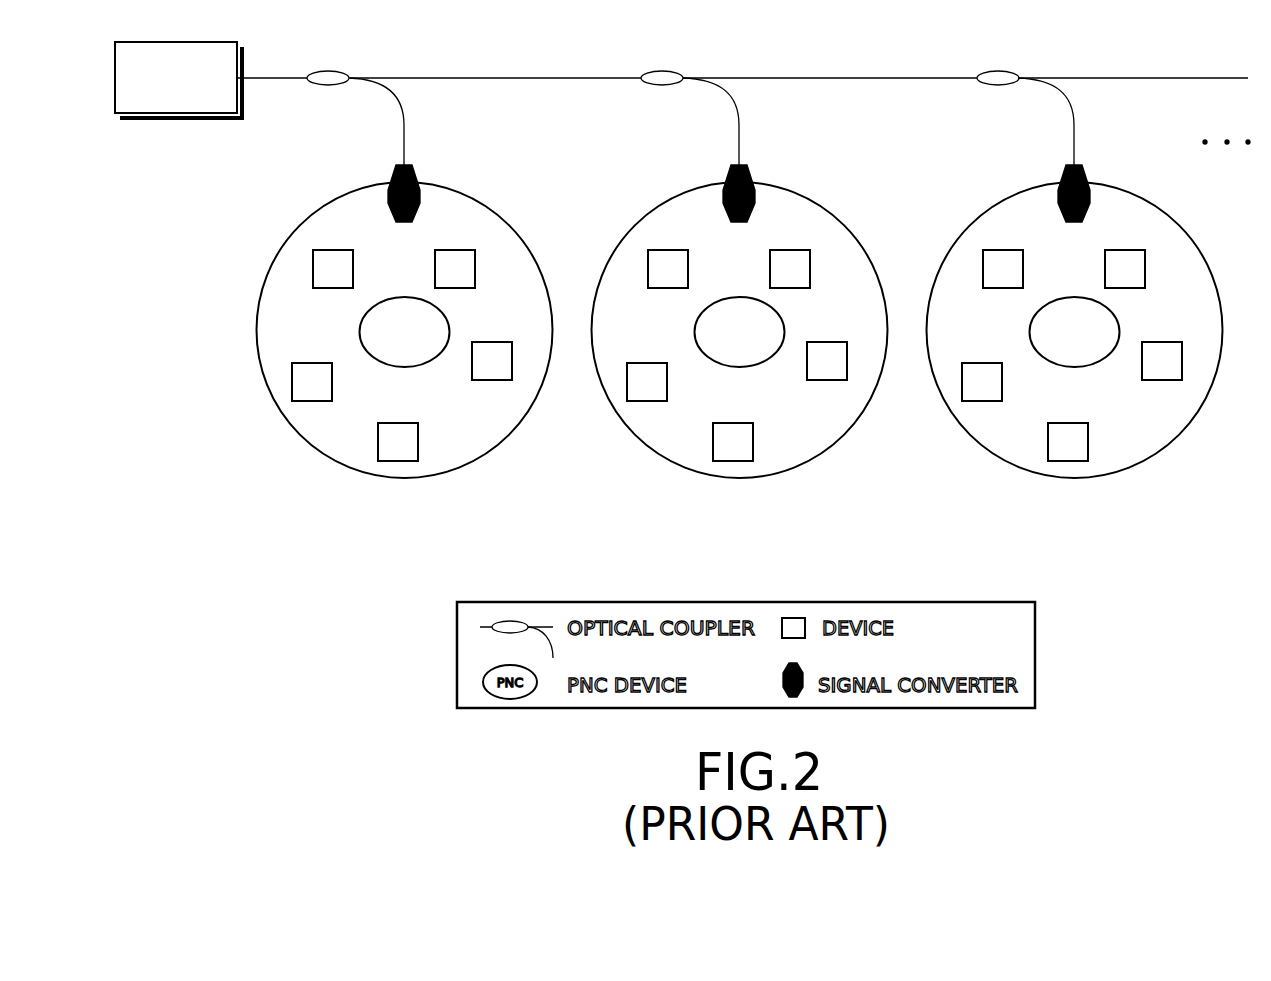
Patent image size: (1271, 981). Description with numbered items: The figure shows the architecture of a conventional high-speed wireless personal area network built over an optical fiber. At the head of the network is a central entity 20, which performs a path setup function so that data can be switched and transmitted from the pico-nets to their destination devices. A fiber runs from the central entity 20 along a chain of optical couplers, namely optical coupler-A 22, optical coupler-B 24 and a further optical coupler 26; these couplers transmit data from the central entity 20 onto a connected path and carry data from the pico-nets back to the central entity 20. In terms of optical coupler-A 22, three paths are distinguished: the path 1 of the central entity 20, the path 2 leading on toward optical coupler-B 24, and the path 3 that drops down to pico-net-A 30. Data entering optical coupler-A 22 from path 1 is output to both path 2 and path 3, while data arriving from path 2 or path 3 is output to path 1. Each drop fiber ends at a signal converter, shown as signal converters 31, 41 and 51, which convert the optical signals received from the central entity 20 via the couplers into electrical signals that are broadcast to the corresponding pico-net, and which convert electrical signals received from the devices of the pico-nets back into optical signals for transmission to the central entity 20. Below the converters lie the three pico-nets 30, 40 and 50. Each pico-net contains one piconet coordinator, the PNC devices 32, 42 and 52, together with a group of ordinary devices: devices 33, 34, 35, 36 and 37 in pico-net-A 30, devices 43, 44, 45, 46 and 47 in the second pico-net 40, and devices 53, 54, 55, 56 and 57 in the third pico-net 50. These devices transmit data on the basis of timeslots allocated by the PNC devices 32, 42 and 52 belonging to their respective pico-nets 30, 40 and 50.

The central entity 20 is at (189, 43).
The path of the central entity 1 is at (272, 65).
The path of the optical coupler-B 2 is at (496, 65).
The path of the pico-net-A 3 is at (376, 121).
The optical coupler-A 22 is at (330, 71).
The optical coupler-B 24 is at (664, 71).
The optical coupler 26 is at (1000, 71).
The pico-net-A 30 is at (490, 208).
The signal converter 31 is at (417, 170).
The PNC device 32 is at (404, 296).
The device 33 is at (337, 251).
The device 34 is at (317, 363).
The device 35 is at (405, 423).
The device 36 is at (460, 251).
The device 37 is at (496, 342).
The pico-net 40 is at (825, 208).
The signal converter 41 is at (752, 170).
The PNC device 42 is at (739, 296).
The device 43 is at (672, 251).
The device 44 is at (652, 363).
The device 45 is at (740, 423).
The device 46 is at (795, 251).
The device 47 is at (831, 342).
The pico-net 50 is at (1160, 208).
The signal converter 51 is at (1087, 170).
The PNC device 52 is at (1074, 296).
The device 53 is at (1007, 251).
The device 54 is at (987, 363).
The device 55 is at (1075, 423).
The device 56 is at (1130, 251).
The device 57 is at (1166, 342).